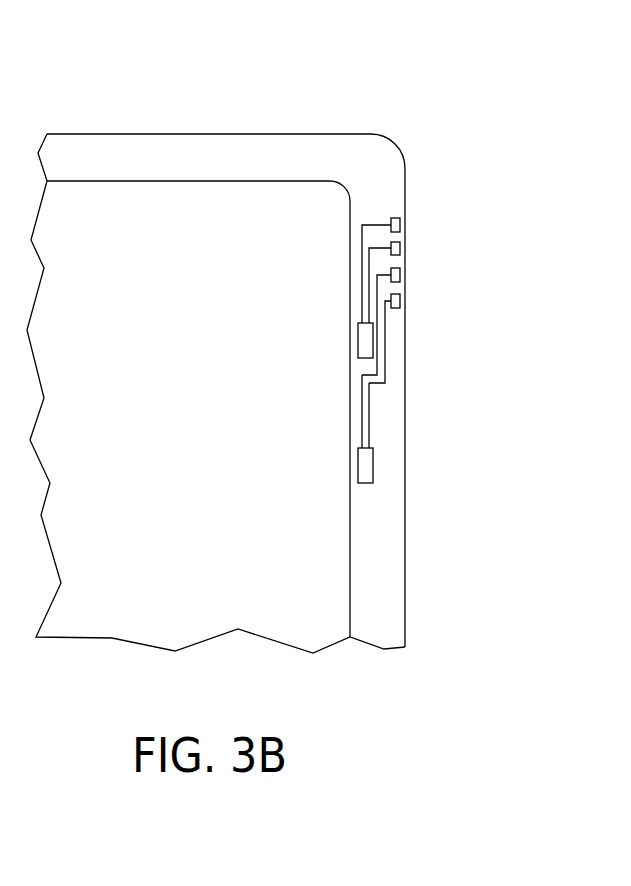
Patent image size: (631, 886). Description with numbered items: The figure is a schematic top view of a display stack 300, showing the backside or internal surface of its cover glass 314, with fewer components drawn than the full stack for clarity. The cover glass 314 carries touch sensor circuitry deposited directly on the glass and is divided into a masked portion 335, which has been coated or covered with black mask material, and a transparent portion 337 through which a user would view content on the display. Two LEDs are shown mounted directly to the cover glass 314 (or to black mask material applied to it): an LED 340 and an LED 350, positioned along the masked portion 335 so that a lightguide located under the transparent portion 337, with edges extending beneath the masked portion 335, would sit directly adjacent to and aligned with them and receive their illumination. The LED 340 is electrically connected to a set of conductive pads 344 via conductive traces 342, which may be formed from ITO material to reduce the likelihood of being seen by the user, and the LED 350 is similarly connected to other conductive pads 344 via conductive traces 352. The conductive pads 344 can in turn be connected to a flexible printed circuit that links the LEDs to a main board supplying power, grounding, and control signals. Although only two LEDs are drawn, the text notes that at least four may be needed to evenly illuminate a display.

The display stack 300 is at (246, 42).
The cover glass 314 is at (205, 134).
The masked portion 335 is at (288, 147).
The transparent portion 337 is at (155, 203).
The LED 340 is at (367, 345).
The conductive traces 342 is at (362, 243).
The conductive pads 344 is at (402, 225).
The LED 350 is at (368, 462).
The conductive traces 352 is at (368, 400).